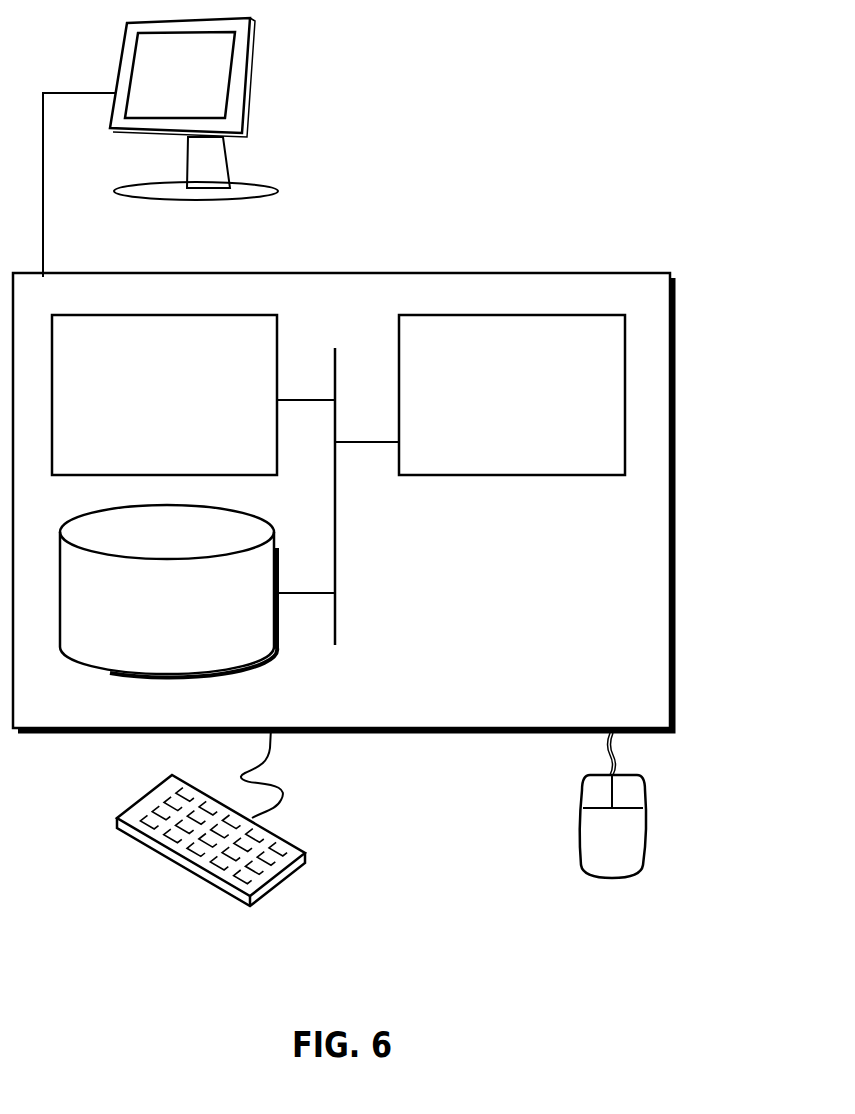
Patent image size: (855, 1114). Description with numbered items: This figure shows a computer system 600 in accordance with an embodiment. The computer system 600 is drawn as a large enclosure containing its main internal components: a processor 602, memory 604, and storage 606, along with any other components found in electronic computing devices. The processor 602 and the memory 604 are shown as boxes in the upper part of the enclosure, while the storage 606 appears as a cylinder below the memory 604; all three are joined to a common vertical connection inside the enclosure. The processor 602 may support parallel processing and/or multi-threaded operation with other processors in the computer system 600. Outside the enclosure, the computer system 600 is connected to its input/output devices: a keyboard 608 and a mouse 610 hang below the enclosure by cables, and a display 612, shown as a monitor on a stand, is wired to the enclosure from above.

The computer system 600 is at (388, 252).
The processor 602 is at (536, 407).
The memory 604 is at (186, 407).
The storage 606 is at (192, 617).
The keyboard 608 is at (137, 835).
The mouse 610 is at (633, 848).
The display 612 is at (160, 147).